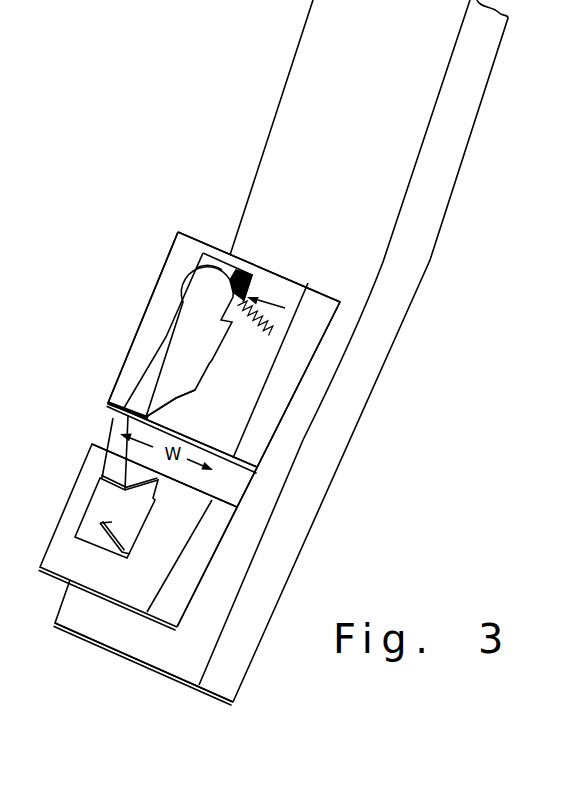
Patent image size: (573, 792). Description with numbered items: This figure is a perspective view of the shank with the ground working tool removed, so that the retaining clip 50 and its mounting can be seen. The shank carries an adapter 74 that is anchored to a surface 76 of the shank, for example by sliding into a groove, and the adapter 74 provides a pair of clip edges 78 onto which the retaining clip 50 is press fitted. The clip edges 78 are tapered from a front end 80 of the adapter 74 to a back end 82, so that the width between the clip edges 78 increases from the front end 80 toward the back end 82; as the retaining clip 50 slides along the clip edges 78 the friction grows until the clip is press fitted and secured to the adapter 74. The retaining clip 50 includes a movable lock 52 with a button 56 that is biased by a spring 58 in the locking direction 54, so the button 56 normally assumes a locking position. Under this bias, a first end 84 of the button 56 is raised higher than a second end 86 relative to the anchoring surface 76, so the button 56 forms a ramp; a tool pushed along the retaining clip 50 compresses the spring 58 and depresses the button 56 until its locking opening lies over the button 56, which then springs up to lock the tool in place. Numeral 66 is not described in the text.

The retaining clip 50 is at (152, 342).
The movable lock 52 is at (247, 367).
The locking direction 54 is at (262, 297).
The button 56 is at (197, 290).
The spring 58 is at (273, 331).
The side walls 66 is at (122, 366).
The adapter 74 is at (115, 443).
The surface of the shank 76 is at (173, 654).
The clip edges 78 is at (108, 402).
The front end 80 is at (130, 610).
The back end 82 is at (262, 266).
The first end of the button 84 is at (230, 255).
The second end of the button 86 is at (177, 397).